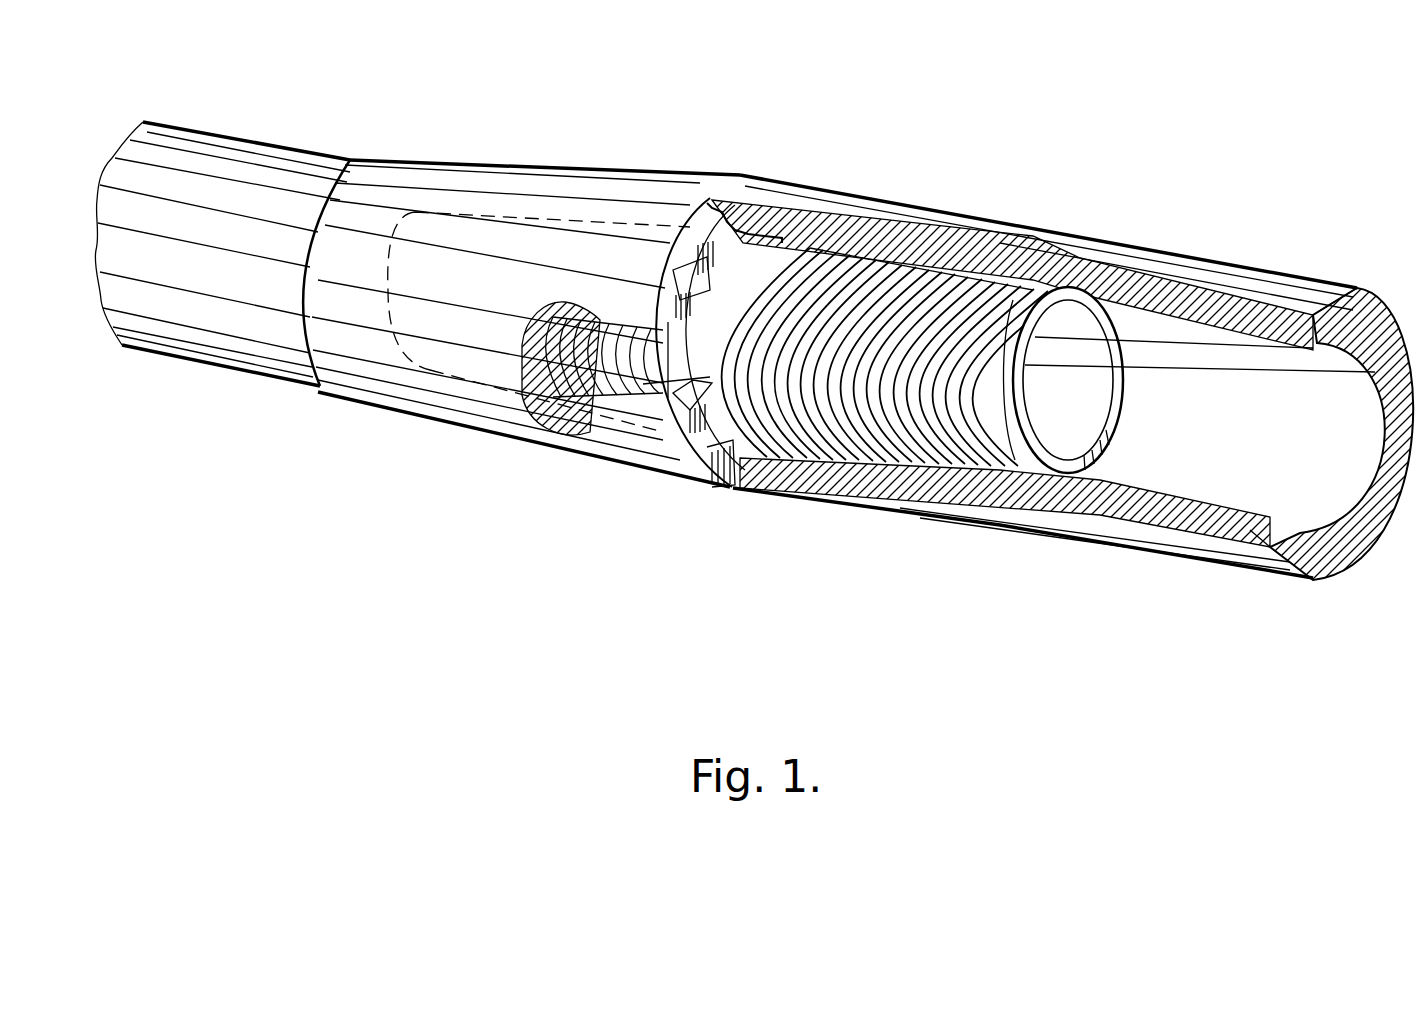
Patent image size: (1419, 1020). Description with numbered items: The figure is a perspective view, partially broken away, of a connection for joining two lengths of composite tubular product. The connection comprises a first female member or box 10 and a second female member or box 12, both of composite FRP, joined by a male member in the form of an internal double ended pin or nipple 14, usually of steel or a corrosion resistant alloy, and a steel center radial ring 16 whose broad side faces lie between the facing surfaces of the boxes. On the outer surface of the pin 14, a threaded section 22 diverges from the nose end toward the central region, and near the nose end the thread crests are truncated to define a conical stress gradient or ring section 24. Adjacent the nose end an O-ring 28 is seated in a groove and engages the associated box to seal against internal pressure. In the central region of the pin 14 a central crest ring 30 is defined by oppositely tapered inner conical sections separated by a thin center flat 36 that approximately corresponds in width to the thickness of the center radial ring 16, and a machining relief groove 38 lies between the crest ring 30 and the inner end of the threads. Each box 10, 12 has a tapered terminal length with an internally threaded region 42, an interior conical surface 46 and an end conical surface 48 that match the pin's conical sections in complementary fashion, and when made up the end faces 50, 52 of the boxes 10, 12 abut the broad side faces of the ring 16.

The first female member or box 10 is at (477, 148).
The second female member or box 12 is at (1153, 240).
The internal double ended pin or nipple 14 is at (1070, 328).
The center radial ring 16 is at (748, 257).
The threaded section 22 is at (1023, 287).
The conical stress gradient or ring section 24 is at (983, 458).
The O-ring 28 is at (558, 392).
The central crest ring 30 is at (683, 462).
The center flat 36 is at (660, 327).
The machining relief groove 38 is at (650, 388).
The internally threaded region 42 is at (948, 258).
The interior conical surface 46 is at (750, 238).
The end conical surface 48 is at (1002, 278).
The end face 50 is at (832, 252).
The end face 52 is at (705, 222).